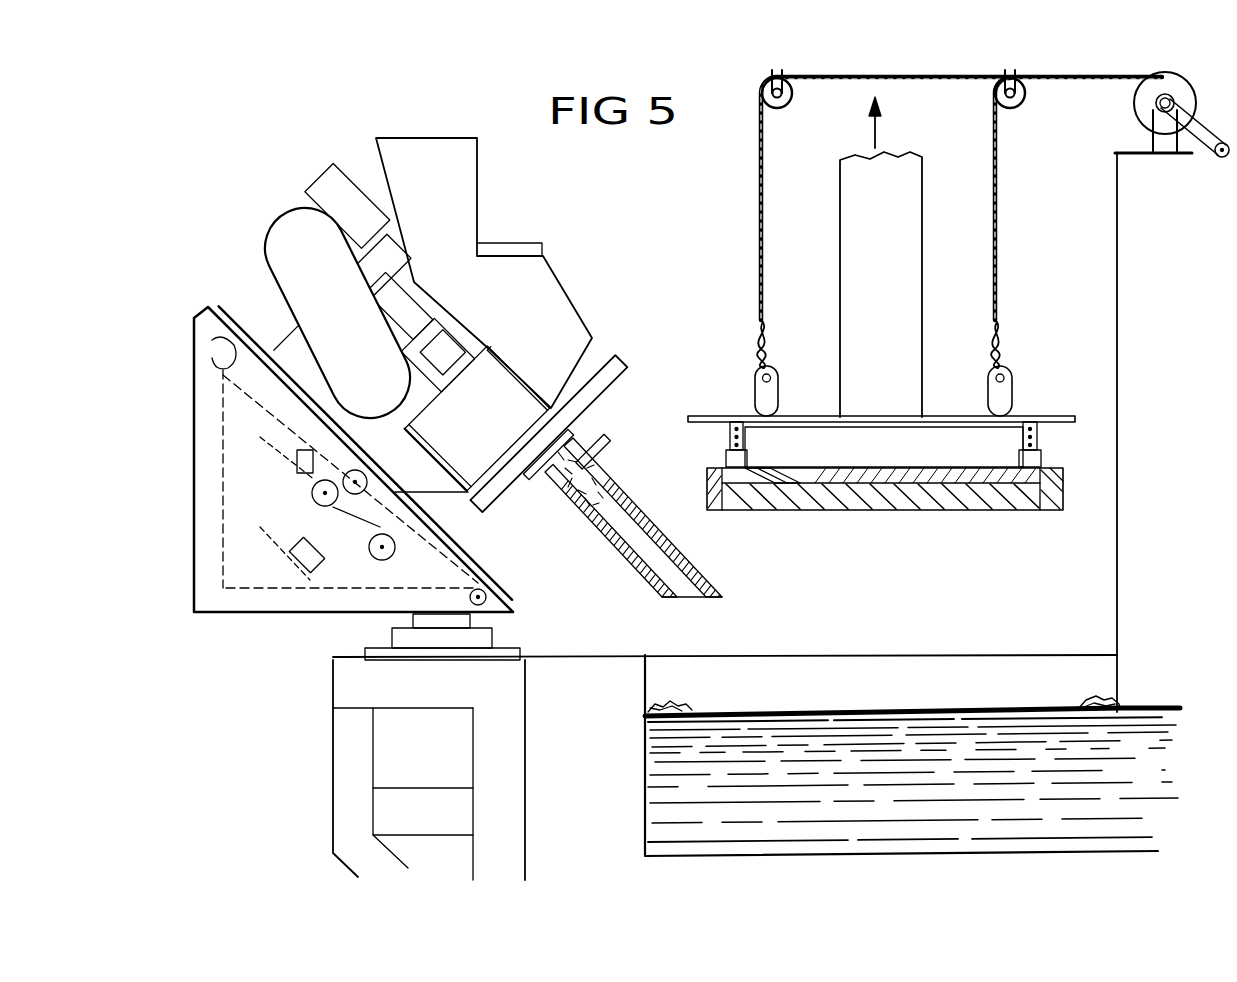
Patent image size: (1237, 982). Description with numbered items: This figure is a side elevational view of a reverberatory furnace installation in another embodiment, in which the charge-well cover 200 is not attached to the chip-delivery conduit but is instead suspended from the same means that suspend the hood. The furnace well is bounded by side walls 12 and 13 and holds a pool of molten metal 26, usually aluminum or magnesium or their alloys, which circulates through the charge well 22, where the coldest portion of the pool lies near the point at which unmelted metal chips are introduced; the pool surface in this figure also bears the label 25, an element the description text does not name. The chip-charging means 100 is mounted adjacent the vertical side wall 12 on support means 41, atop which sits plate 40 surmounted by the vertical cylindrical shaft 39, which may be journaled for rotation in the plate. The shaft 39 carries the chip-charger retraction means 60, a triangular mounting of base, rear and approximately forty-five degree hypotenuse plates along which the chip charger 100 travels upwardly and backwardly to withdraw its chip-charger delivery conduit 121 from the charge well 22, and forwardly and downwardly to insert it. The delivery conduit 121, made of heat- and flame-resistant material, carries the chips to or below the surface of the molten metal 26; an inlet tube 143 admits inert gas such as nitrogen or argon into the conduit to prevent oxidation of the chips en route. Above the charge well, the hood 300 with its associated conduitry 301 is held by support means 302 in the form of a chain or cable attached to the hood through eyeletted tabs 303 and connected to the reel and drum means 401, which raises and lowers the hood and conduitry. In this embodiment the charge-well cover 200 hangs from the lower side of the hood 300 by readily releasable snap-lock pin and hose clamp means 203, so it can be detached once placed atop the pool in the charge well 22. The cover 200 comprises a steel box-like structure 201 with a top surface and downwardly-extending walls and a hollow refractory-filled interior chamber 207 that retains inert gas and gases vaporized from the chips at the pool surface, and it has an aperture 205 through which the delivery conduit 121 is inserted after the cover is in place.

The side wall 12 is at (587, 840).
The side wall 13 is at (1157, 349).
The charge well 22 is at (950, 852).
The foam 25 is at (663, 693).
The molten metal 26 is at (823, 830).
The shaft 39 is at (412, 615).
The plate 40 is at (393, 641).
The support means 41 is at (363, 811).
The chip-charger retraction means 60 is at (186, 467).
The chip-charging means 100 is at (509, 228).
The chip-charger delivery conduit 121 is at (637, 515).
The inlet tube 143 is at (607, 446).
The charge-well cover 200 is at (938, 468).
The box-like structure 201 is at (1060, 469).
The snap-lock pin and hose clamp means 203 is at (1040, 444).
The aperture 205 is at (778, 468).
The interior chamber 207 is at (1000, 510).
The hood 300 is at (1030, 412).
The conduitry 301 is at (836, 273).
The support means 302 is at (998, 264).
The eyeletted tabs 303 is at (1013, 386).
The reel and drum means 401 is at (1125, 114).